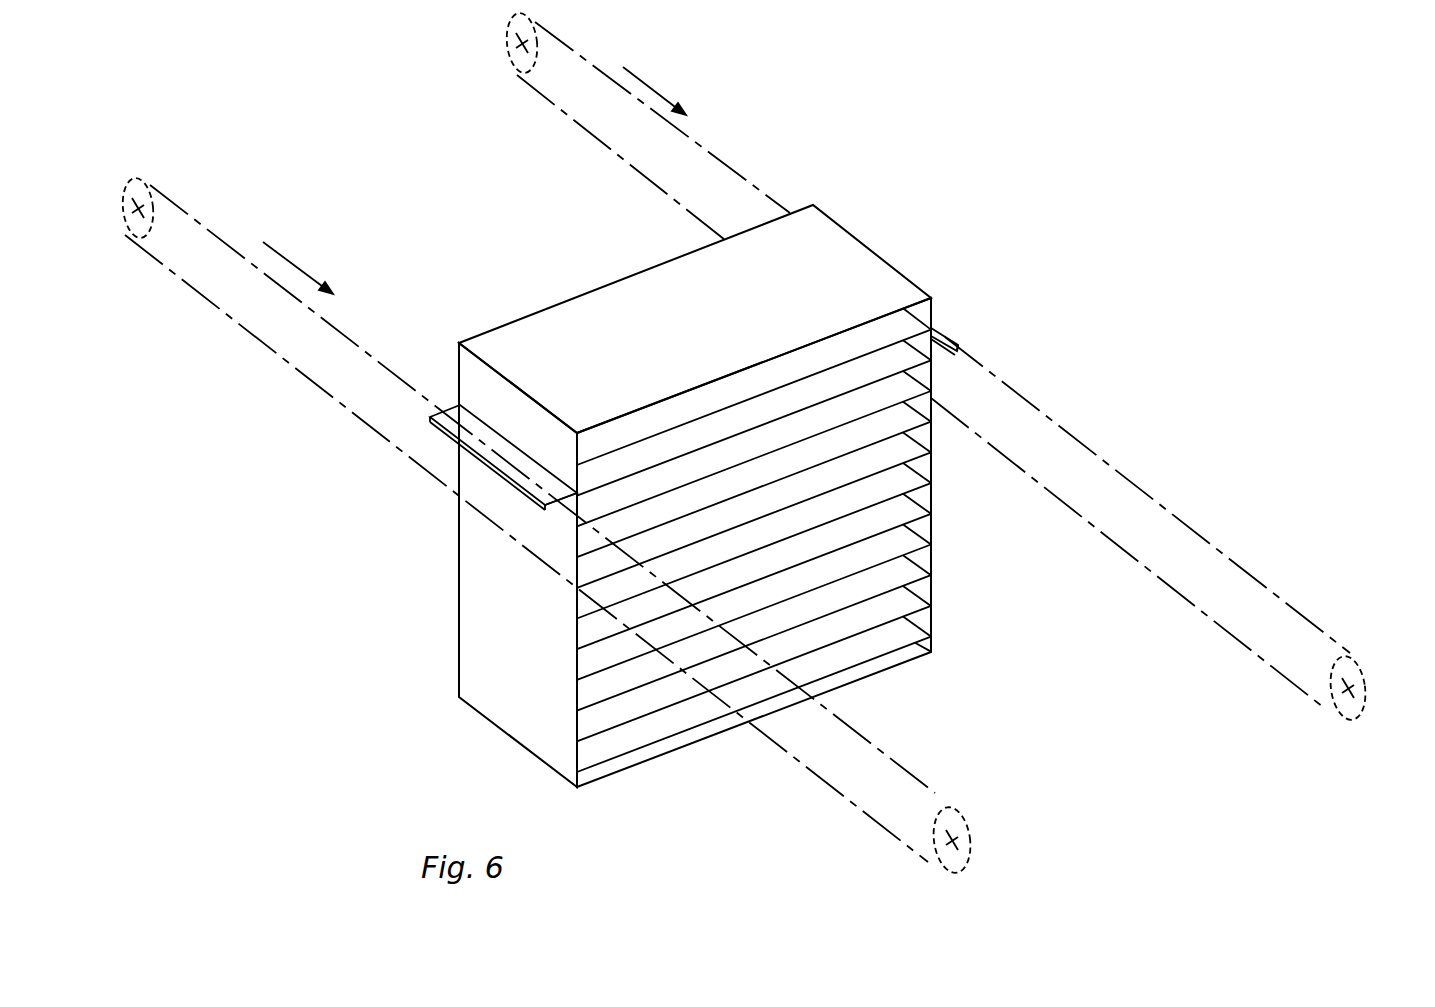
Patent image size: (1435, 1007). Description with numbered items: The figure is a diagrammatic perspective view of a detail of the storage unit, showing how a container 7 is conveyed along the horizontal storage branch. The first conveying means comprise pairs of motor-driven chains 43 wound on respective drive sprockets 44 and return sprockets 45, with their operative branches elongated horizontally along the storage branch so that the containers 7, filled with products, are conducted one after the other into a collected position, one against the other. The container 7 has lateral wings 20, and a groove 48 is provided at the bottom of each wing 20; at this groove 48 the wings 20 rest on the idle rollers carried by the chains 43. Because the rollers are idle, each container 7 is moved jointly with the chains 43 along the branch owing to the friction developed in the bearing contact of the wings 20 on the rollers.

The container 7 is at (590, 288).
The wing 20 is at (514, 476).
The motor-driven chain 43 is at (1058, 423).
The drive sprocket 44 is at (1357, 677).
The return sprocket 45 is at (508, 60).
The groove 48 is at (570, 500).